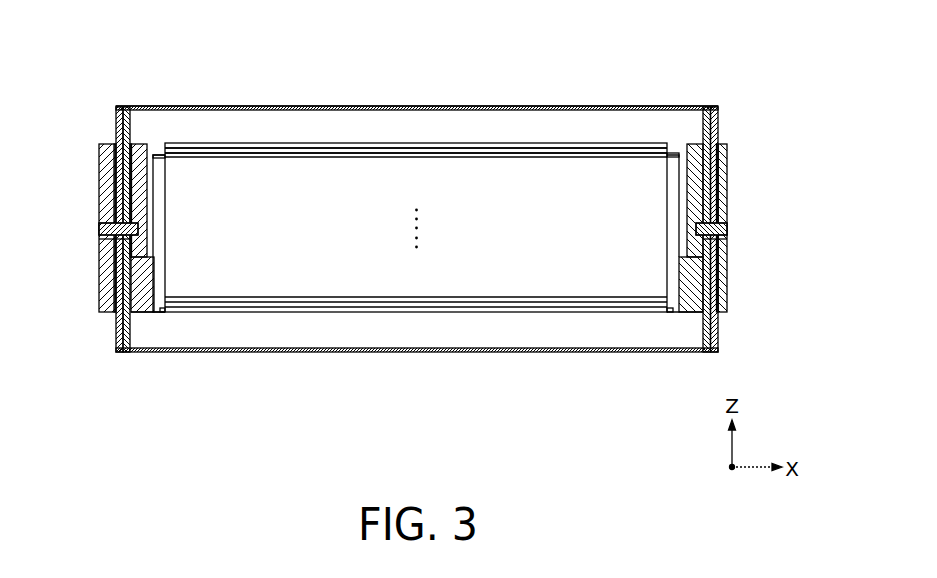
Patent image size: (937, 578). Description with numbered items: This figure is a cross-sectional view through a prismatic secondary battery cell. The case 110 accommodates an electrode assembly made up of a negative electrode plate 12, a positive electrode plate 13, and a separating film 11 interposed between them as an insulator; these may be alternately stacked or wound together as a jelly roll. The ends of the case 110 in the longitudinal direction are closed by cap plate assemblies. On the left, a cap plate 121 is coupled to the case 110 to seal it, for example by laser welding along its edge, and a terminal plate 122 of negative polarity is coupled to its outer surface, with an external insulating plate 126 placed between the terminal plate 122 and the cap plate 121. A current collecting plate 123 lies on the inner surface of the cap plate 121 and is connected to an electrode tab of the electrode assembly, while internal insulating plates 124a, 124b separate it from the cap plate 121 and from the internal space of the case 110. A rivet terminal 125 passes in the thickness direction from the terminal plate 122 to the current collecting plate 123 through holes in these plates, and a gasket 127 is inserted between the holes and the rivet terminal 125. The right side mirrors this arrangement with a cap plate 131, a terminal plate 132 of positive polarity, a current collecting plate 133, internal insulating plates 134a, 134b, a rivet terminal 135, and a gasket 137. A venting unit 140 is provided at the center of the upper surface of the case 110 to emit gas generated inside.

The separating film 11 is at (552, 147).
The negative electrode (plate) 12 is at (287, 158).
The positive electrode (plate) 13 is at (608, 153).
The case 110 is at (483, 107).
The venting unit 140 is at (405, 107).
The cap plate 121 is at (117, 107).
The terminal plate 122 is at (103, 143).
The current collecting plate 123 is at (139, 144).
The insulating plate 124a is at (132, 144).
The insulating plate 124b is at (146, 144).
The rivet terminal 125 is at (99, 231).
The insulating plate 126 is at (112, 143).
The gasket 127 is at (116, 250).
The cap plate 131 is at (717, 107).
The terminal plate 132 is at (722, 147).
The current collecting plate 133 is at (696, 146).
The insulating plate 134a is at (701, 146).
The insulating plate 134b is at (691, 146).
The rivet terminal 135 is at (727, 231).
The gasket 137 is at (720, 250).